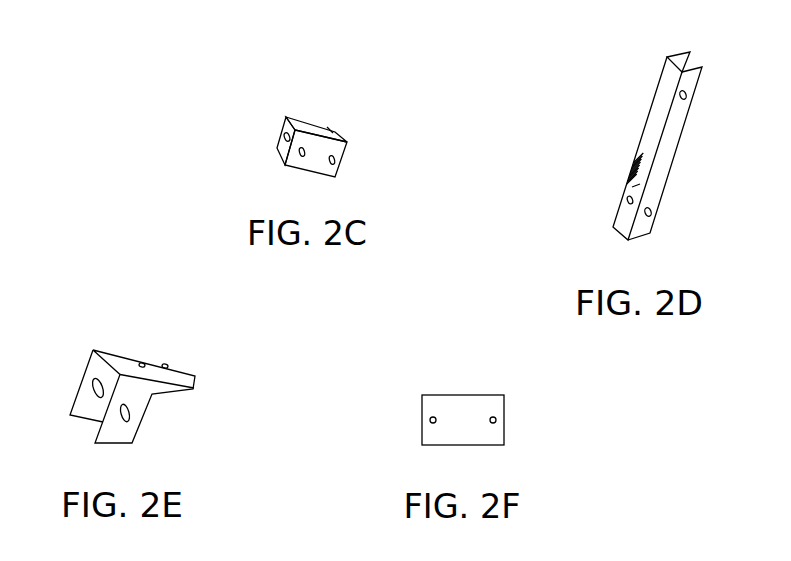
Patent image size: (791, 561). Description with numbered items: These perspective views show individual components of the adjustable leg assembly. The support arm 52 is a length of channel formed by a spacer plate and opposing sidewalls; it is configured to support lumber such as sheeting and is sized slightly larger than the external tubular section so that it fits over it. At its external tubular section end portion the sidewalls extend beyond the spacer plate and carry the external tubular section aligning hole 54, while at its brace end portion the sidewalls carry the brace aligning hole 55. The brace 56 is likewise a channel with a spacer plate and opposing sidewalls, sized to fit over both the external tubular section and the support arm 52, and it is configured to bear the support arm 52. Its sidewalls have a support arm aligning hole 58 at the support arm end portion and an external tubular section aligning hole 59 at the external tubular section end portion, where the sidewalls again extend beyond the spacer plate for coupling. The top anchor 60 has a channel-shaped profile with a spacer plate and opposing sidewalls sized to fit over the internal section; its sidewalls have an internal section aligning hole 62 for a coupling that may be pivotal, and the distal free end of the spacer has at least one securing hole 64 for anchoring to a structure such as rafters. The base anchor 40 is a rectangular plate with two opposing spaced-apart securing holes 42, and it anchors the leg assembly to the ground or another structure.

In FIG. 2C, the support arm 52 is at (314, 128).
In FIG. 2C, the external tubular section aligning hole 54 is at (340, 157).
In FIG. 2C, the brace aligning hole 55 is at (284, 139).
In FIG. 2D, the brace 56 is at (660, 80).
In FIG. 2D, the support arm aligning hole 58 is at (686, 96).
In FIG. 2D, the external tubular section aligning hole 59 is at (649, 213).
In FIG. 2E, the top anchor 60 is at (95, 348).
In FIG. 2E, the internal section aligning hole 62 is at (97, 389).
In FIG. 2E, the securing hole 64 is at (167, 362).
In FIG. 2F, the base anchor 40 is at (463, 403).
In FIG. 2F, the securing hole 42 is at (497, 420).